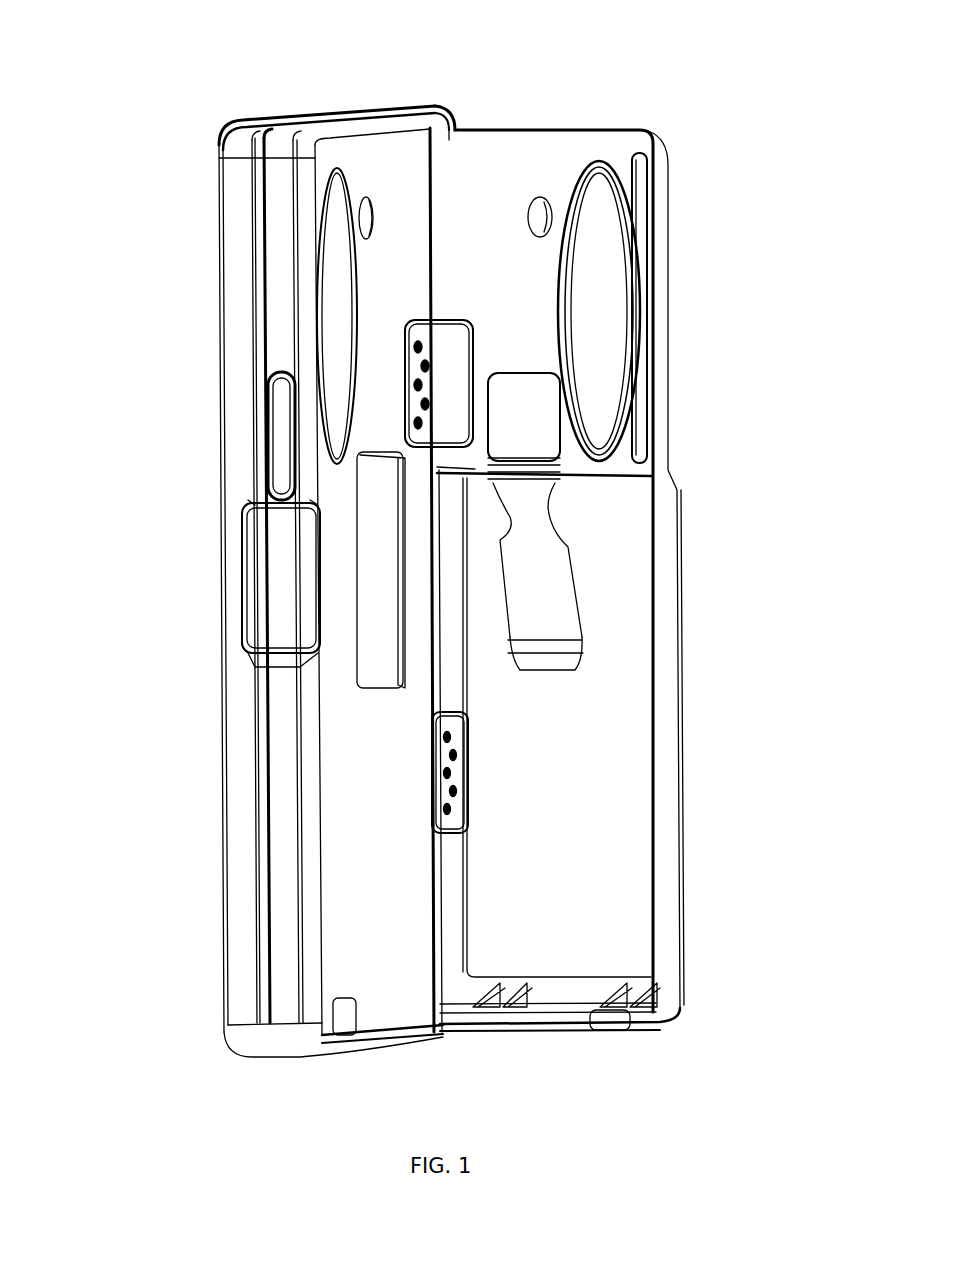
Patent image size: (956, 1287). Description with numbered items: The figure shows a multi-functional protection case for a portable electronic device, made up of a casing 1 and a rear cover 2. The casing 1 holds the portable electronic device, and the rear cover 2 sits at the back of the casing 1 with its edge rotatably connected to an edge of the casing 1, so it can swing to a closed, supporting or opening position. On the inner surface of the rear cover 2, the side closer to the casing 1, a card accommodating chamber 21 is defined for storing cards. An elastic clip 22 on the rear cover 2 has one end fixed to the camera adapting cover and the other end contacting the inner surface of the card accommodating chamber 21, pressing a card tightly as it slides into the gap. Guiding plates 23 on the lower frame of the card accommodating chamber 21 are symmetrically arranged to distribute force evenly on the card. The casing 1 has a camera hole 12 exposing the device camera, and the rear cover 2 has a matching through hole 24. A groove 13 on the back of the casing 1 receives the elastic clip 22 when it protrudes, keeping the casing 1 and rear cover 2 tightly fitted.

The casing 1 is at (235, 210).
The camera hole 12 is at (335, 190).
The groove 13 is at (383, 578).
The rear cover 2 is at (660, 393).
The card accommodating chamber 21 is at (612, 787).
The elastic clip 22 is at (558, 572).
The guiding plate 23 is at (660, 1008).
The through hole 24 is at (617, 210).